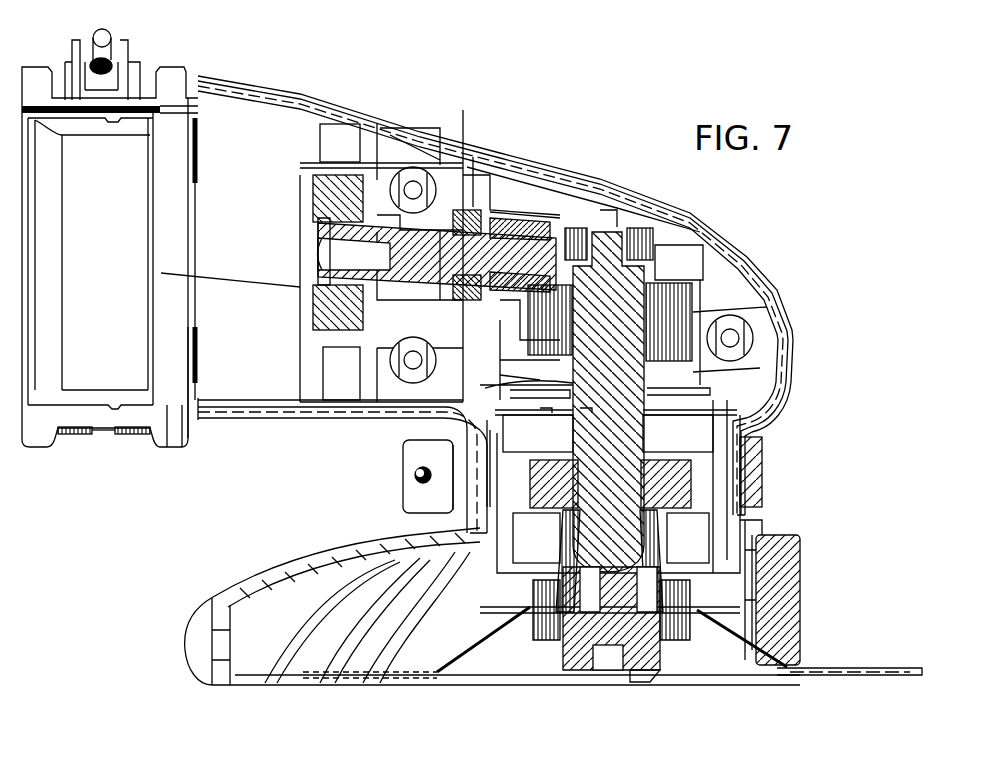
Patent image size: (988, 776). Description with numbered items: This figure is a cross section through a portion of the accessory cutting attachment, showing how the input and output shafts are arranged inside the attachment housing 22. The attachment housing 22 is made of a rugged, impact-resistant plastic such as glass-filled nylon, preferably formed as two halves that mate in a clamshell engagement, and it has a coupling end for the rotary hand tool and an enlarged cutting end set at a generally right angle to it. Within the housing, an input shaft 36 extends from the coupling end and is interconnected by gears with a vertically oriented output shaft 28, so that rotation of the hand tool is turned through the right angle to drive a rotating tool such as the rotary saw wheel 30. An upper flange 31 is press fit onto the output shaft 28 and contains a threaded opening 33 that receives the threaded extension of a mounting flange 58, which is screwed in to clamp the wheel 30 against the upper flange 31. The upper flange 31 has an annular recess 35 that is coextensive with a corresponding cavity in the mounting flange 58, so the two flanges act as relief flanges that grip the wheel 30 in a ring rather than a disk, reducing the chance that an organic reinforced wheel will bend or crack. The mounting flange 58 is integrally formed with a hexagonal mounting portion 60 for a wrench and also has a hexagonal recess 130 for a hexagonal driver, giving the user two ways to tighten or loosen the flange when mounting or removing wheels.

The attachment housing 22 is at (471, 142).
The input shaft 36 is at (510, 240).
The output shaft 28 is at (610, 428).
The threaded opening 33 is at (615, 545).
The upper flange 31 is at (760, 582).
The rotary saw wheel 30 is at (845, 666).
The annular recess 35 is at (540, 645).
The hexagonal mounting portion 60 is at (575, 655).
The hexagonal recess 130 is at (600, 660).
The mounting flange 58 is at (648, 672).